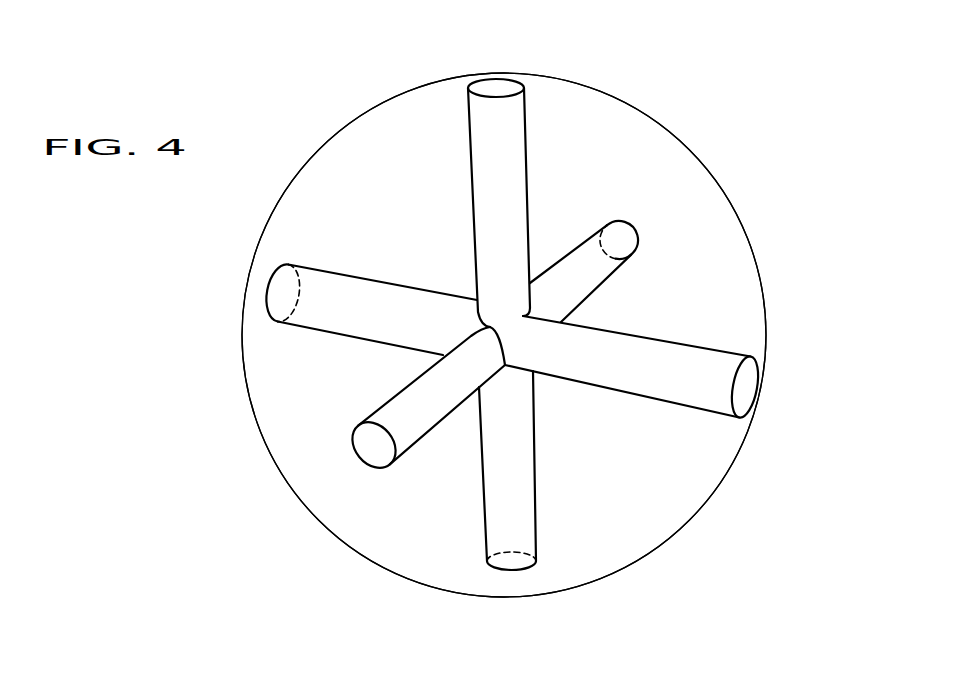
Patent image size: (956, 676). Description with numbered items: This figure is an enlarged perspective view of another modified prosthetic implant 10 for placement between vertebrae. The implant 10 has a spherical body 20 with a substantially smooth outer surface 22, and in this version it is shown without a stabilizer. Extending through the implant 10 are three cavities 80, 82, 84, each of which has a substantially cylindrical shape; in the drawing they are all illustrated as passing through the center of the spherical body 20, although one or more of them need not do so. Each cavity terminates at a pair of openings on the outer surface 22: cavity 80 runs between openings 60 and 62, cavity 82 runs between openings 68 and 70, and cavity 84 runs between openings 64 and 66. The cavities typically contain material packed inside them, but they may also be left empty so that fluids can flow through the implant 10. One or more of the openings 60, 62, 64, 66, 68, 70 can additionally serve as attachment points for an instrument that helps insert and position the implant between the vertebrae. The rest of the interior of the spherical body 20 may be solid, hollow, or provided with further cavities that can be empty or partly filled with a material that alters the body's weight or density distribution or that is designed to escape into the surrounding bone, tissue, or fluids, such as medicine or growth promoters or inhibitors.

The prosthetic implant 10 is at (742, 167).
The spherical body 20 is at (768, 293).
The outer surface 22 is at (730, 253).
The opening 60 is at (495, 88).
The opening 62 is at (512, 563).
The opening 64 is at (747, 388).
The opening 66 is at (283, 293).
The opening 68 is at (618, 242).
The opening 70 is at (367, 445).
The cavity 80 is at (483, 198).
The cavity 82 is at (573, 283).
The cavity 84 is at (643, 380).